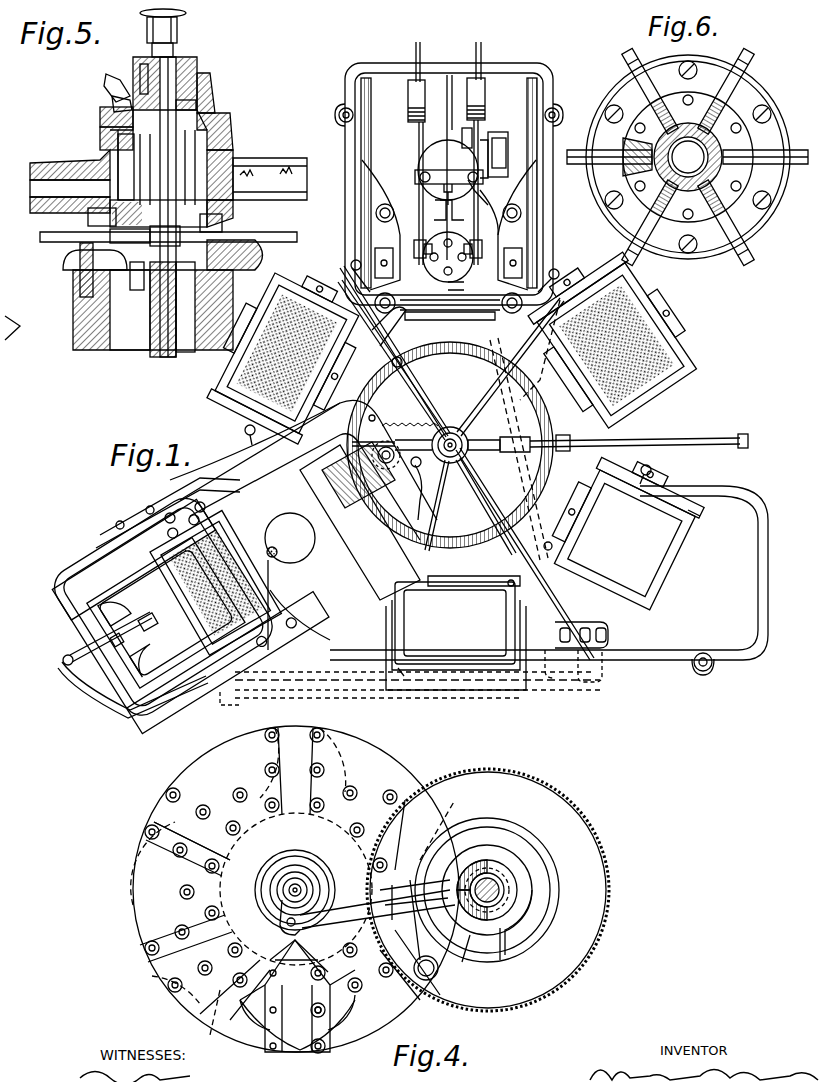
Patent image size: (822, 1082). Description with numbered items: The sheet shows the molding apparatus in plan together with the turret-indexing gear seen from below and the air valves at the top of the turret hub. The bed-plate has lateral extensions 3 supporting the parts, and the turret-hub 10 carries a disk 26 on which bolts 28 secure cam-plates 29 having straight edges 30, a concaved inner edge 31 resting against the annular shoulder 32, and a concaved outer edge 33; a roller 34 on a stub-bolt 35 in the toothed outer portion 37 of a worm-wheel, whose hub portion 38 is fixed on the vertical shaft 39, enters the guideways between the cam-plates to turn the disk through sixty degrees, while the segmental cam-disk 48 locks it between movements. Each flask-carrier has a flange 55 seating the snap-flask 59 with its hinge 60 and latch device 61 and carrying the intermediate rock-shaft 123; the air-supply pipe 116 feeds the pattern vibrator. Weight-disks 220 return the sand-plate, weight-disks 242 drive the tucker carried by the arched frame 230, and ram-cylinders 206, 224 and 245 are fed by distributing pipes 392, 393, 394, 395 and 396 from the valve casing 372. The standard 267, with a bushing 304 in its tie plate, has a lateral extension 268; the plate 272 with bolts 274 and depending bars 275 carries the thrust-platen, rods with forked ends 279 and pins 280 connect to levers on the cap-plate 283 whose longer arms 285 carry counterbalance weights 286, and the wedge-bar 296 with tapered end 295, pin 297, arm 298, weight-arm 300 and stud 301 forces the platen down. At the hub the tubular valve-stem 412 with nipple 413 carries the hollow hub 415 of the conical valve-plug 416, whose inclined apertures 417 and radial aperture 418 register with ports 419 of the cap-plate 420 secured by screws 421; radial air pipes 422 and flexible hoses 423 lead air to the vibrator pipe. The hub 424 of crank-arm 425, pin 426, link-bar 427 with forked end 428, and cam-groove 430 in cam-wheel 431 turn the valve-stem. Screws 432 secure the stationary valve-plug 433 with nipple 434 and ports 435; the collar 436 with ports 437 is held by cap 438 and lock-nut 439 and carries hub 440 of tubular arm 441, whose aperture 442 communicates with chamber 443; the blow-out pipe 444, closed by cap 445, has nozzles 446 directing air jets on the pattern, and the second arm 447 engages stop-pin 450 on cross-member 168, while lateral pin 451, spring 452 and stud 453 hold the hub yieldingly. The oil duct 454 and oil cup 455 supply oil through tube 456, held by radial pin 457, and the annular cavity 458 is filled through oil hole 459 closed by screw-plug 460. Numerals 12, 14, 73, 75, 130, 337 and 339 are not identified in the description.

In FIG. 1, the lateral extensions 3 is at (348, 197).
In FIG. 5, the turret-hub 10 is at (76, 326).
In FIG. 5, the bed 12 is at (75, 272).
In FIG. 1, the shaft 14 is at (450, 428).
In FIG. 4, the disk 26 is at (135, 890).
In FIG. 4, the bolts 28 is at (322, 1006).
In FIG. 4, the cam-plates 29 is at (343, 959).
In FIG. 4, the convergent straight edges 30 is at (312, 995).
In FIG. 4, the concaved inner edge 31 is at (270, 962).
In FIG. 4, the annular shoulder 32 is at (232, 848).
In FIG. 4, the concaved outer edge 33 is at (350, 1015).
In FIG. 4, the roller 34 is at (438, 975).
In FIG. 4, the shouldered stub-bolt 35 is at (426, 968).
In FIG. 4, the peripherally toothed outer portion 37 is at (488, 890).
In FIG. 4, the inner or hub portion 38 is at (481, 945).
In FIG. 4, the vertical shaft 39 is at (520, 906).
In FIG. 4, the segmental cam-disk 48 is at (552, 893).
In FIG. 1, the lateral flange 55 is at (222, 386).
In FIG. 1, the snap-flask 59 is at (230, 364).
In FIG. 1, the hinge 60 is at (690, 520).
In FIG. 1, the latch device 61 is at (552, 548).
In FIG. 1, the hole 73 is at (195, 511).
In FIG. 1, the hole 75 is at (167, 522).
In FIG. 1, the air-supply pipe 116 is at (350, 264).
In FIG. 1, the intermediate rock-shaft 123 is at (370, 342).
In FIG. 1, the bar 130 is at (460, 326).
In FIG. 1, the inner cross-member 168 is at (418, 488).
In FIG. 1, the ram-cylinder 206 is at (130, 636).
In FIG. 1, the weight-disks 220 is at (188, 598).
In FIG. 1, the ram-cylinder 224 is at (366, 515).
In FIG. 1, the arched tucker-sustaining frame 230 is at (242, 500).
In FIG. 1, the weight-disks 242 is at (290, 581).
In FIG. 1, the ram-cylinder 245 is at (272, 548).
In FIG. 1, the standard 267 is at (358, 163).
In FIG. 1, the lateral extension 268 is at (494, 218).
In FIG. 1, the substantially rectangular plate 272 is at (469, 282).
In FIG. 1, the bolts 274 is at (502, 296).
In FIG. 1, the depending bars 275 is at (448, 269).
In FIG. 1, the forked upper ends 279 is at (418, 252).
In FIG. 1, the pins 280 is at (480, 256).
In FIG. 1, the cap-plate 283 is at (444, 274).
In FIG. 1, the longer arms 285 is at (418, 140).
In FIG. 1, the counterbalance weight 286 is at (408, 92).
In FIG. 1, the tapered end portion 295 is at (433, 214).
In FIG. 1, the wedge-bar 296 is at (460, 205).
In FIG. 1, the pin 297 is at (466, 151).
In FIG. 1, the upwardly extending arm 298 is at (478, 130).
In FIG. 1, the segmental weight-arm 300 is at (486, 172).
In FIG. 1, the lateral stud 301 is at (500, 154).
In FIG. 1, the bushing 304 is at (449, 167).
In FIG. 1, the pin 337 is at (440, 182).
In FIG. 1, the wire 339 is at (470, 190).
In FIG. 1, the valve casing 372 is at (606, 634).
In FIG. 1, the distributing pipe 392 is at (604, 672).
In FIG. 1, the distributing pipe 393 is at (530, 676).
In FIG. 1, the distributing pipe 394 is at (505, 468).
In FIG. 1, the distributing pipe 395 is at (452, 133).
In FIG. 1, the distributing pipe 396 is at (348, 686).
In FIG. 5, the tubular valve-stem 412 is at (152, 321).
In FIG. 4, the nipple 413 is at (298, 880).
In FIG. 5, the hollow hub 415 is at (150, 296).
In FIG. 5, the conical valve-plug 416 is at (130, 276).
In FIG. 6, the conical valve-plug 416 is at (718, 148).
In FIG. 5, the divergently inclined apertures 417 is at (165, 207).
In FIG. 5, the radial aperture 418 is at (165, 236).
In FIG. 6, the radial aperture 418 is at (662, 176).
In FIG. 5, the radial ports 419 is at (110, 234).
In FIG. 6, the radial ports 419 is at (644, 140).
In FIG. 5, the cap-plate 420 is at (260, 252).
In FIG. 5, the screws 421 is at (66, 260).
In FIG. 5, the radial air pipe 422 is at (155, 234).
In FIG. 6, the radial air pipe 422 is at (626, 152).
In FIG. 1, the radial air pipe 422 is at (420, 390).
In FIG. 1, the flexible hose 423 is at (398, 358).
In FIG. 4, the hub 424 is at (288, 884).
In FIG. 4, the crank-arm 425 is at (285, 900).
In FIG. 4, the pin 426 is at (292, 928).
In FIG. 4, the link-bar 427 is at (377, 909).
In FIG. 4, the forked end 428 is at (474, 864).
In FIG. 4, the cam-groove 430 is at (512, 880).
In FIG. 4, the cam-wheel 431 is at (504, 856).
In FIG. 5, the screws 432 is at (224, 222).
In FIG. 5, the conical valve-plug 433 is at (112, 130).
In FIG. 5, the nipple 434 is at (174, 50).
In FIG. 5, the radial ports 435 is at (110, 220).
In FIG. 5, the collar 436 is at (110, 116).
In FIG. 5, the radial ports 437 is at (100, 152).
In FIG. 5, the cap 438 is at (208, 90).
In FIG. 5, the lock-nut 439 is at (196, 66).
In FIG. 5, the hub 440 is at (226, 122).
In FIG. 1, the hub 440 is at (454, 468).
In FIG. 5, the tubular socketed arm 441 is at (60, 216).
In FIG. 1, the tubular socketed arm 441 is at (480, 448).
In FIG. 5, the central aperture 442 is at (70, 196).
In FIG. 5, the chamber 443 is at (226, 144).
In FIG. 1, the blow-out pipe 444 is at (580, 444).
In FIG. 1, the cap 445 is at (690, 443).
In FIG. 1, the nozzles 446 is at (398, 444).
In FIG. 5, the second arm 447 is at (280, 168).
In FIG. 1, the second arm 447 is at (414, 444).
In FIG. 1, the stop-pin 450 is at (388, 460).
In FIG. 1, the lateral pin 451 is at (450, 426).
In FIG. 1, the spring 452 is at (410, 415).
In FIG. 1, the stud 453 is at (372, 412).
In FIG. 5, the axial oil duct 454 is at (136, 70).
In FIG. 5, the oil cup 455 is at (178, 22).
In FIG. 5, the tube 456 is at (236, 206).
In FIG. 5, the radial pin 457 is at (150, 148).
In FIG. 5, the annular cavity 458 is at (196, 102).
In FIG. 5, the oil hole 459 is at (114, 98).
In FIG. 5, the screw-plug 460 is at (108, 76).